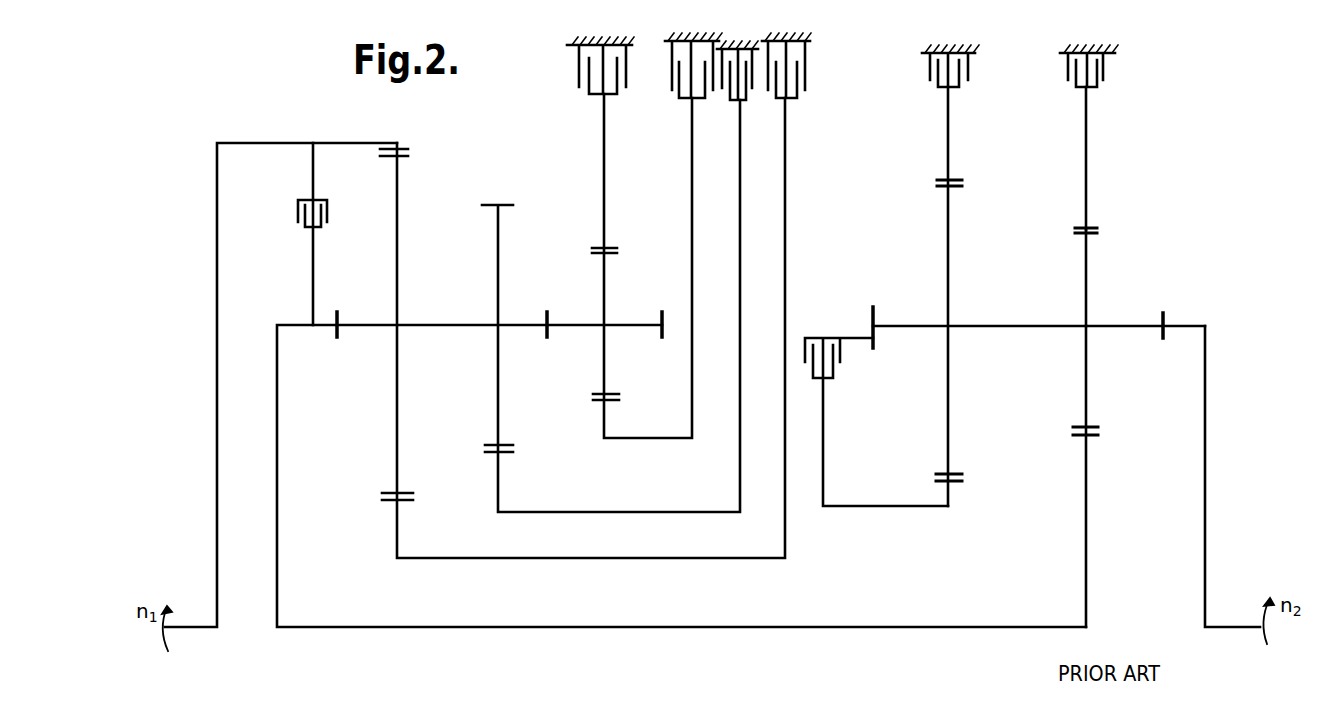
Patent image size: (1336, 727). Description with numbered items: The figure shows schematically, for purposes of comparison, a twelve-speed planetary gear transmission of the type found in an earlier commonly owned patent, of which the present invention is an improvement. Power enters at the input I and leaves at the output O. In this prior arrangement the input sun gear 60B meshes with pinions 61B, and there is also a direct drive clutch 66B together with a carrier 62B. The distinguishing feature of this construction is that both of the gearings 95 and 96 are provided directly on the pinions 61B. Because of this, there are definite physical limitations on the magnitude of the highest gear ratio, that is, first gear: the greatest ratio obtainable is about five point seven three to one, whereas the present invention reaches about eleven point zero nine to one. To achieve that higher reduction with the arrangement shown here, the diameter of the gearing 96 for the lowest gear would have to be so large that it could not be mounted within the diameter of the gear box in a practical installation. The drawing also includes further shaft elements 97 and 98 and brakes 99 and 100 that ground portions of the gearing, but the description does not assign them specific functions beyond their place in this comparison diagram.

The input shaft I is at (190, 627).
The output shaft O is at (1228, 627).
The direct drive clutch 66B is at (840, 355).
The pinions 61B is at (1008, 326).
The carrier 62B is at (1205, 391).
The input sun gear 60B is at (1087, 502).
The gearing 95 is at (1086, 276).
The gearing 96 is at (948, 256).
The shaft 97 is at (1087, 152).
The clutch 98 is at (948, 146).
The brake 99 is at (1103, 70).
The brake 100 is at (968, 70).